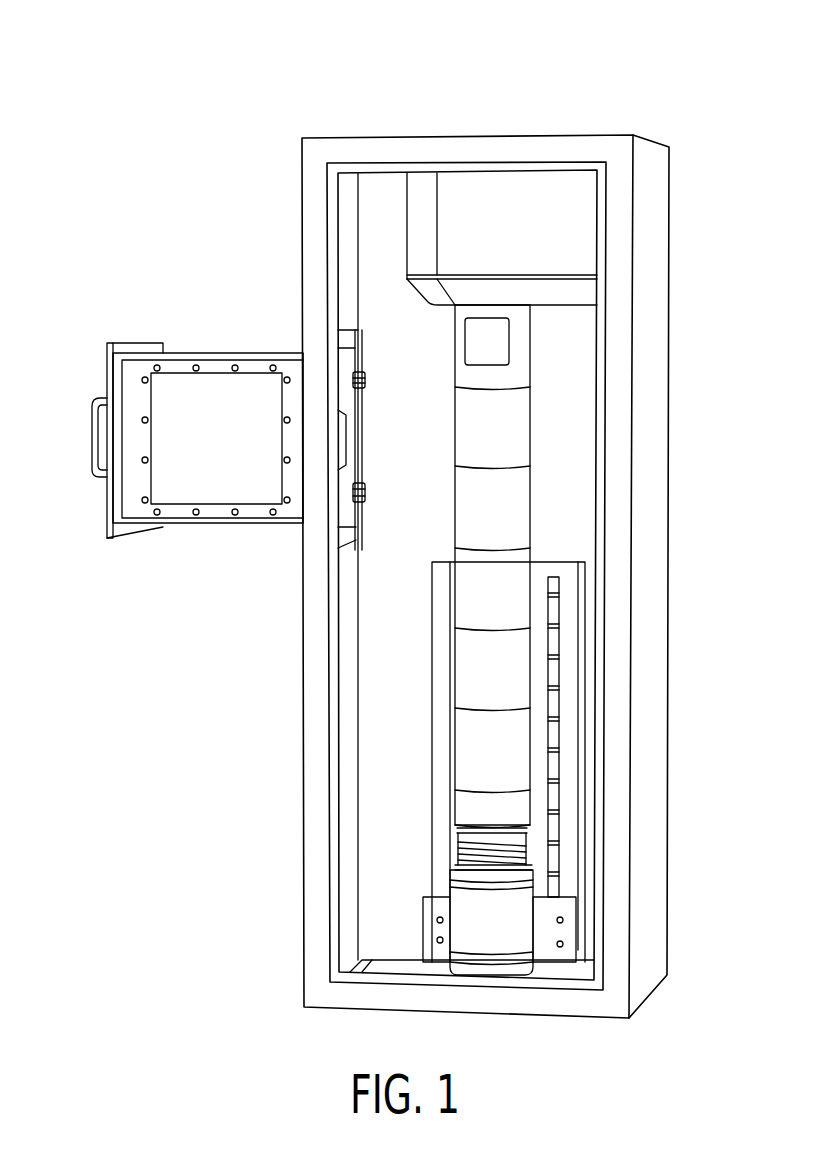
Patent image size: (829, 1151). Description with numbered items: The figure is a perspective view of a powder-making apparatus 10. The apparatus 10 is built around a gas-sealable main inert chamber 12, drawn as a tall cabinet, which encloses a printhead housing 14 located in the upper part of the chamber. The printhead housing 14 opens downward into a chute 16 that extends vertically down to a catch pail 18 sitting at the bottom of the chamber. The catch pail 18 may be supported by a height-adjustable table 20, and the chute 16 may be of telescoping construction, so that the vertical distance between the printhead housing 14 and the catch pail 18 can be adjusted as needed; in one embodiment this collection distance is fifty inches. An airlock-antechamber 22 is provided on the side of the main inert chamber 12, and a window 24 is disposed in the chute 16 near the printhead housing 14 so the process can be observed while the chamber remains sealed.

The powder-making apparatus 10 is at (660, 99).
The main inert chamber 12 is at (648, 495).
The printhead housing 14 is at (487, 213).
The chute 16 is at (487, 412).
The catch pail 18 is at (488, 926).
The height-adjustable table 20 is at (403, 955).
The airlock-antechamber 22 is at (208, 440).
The window 24 is at (488, 343).